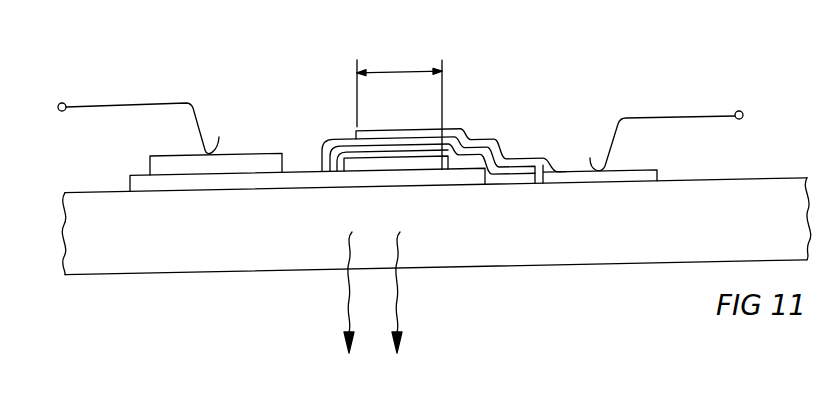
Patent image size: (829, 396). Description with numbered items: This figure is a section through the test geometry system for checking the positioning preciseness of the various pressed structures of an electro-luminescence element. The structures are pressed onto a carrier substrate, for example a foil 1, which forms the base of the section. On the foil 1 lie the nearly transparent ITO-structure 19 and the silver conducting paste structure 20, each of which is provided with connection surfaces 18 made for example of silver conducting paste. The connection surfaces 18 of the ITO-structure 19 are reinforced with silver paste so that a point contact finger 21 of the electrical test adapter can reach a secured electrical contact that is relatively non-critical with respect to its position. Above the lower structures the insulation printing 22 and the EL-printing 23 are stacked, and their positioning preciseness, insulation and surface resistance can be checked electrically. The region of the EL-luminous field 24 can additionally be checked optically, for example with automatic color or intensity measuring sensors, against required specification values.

The foil 1 is at (578, 245).
The connection surfaces 18 is at (247, 153).
The ITO-structure 19 is at (128, 183).
The conducting paste structure 20 is at (658, 173).
The point contact finger 21 is at (143, 102).
The insulation printing 22 is at (420, 152).
The EL-printing 23 is at (353, 158).
The luminous field 24 is at (400, 72).